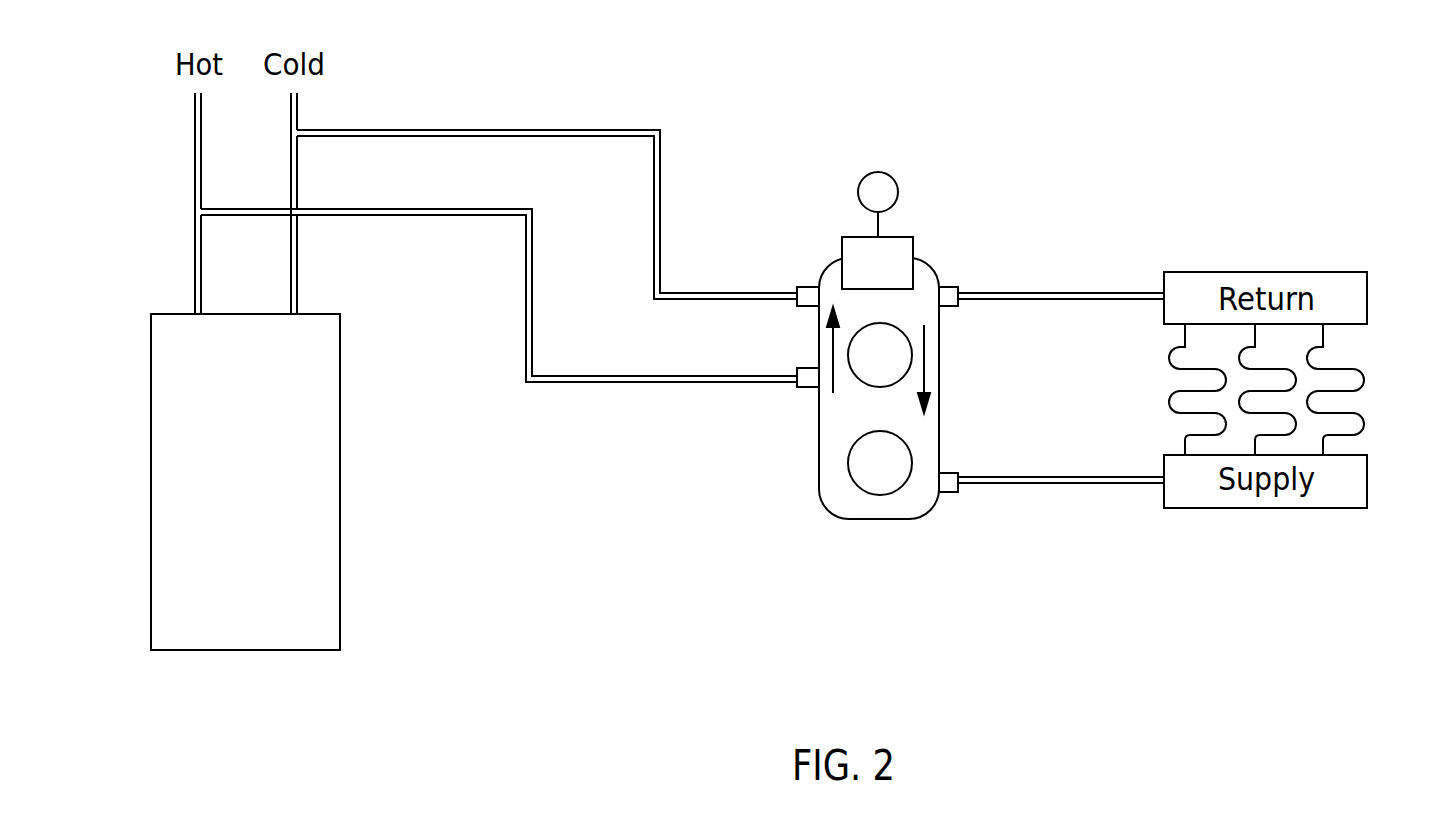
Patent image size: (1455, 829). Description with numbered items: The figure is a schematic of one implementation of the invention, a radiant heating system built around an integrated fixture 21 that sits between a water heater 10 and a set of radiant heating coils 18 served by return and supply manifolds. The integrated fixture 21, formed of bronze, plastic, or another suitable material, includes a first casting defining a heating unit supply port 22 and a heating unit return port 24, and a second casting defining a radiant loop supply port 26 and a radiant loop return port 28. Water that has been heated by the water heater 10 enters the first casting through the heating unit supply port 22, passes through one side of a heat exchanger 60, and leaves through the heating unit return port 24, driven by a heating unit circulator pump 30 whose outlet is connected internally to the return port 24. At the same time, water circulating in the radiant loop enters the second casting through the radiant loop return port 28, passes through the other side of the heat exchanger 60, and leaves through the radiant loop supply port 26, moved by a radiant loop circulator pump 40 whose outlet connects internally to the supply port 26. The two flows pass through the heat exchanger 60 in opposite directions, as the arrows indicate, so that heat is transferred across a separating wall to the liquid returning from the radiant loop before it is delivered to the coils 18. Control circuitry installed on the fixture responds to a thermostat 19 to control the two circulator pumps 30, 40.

The water heater 10 is at (207, 652).
The radiant heating loops 18 is at (1363, 378).
The thermostat 19 is at (878, 171).
The integrated fixture 21 is at (833, 425).
The heating unit supply port 22 is at (808, 368).
The heating unit return port 24 is at (808, 287).
The radiant loop supply port 26 is at (948, 287).
The radiant loop return port 28 is at (947, 493).
The heating unit circulator pump 30 is at (902, 358).
The radiant loop circulator pump 40 is at (902, 463).
The heat exchanger 60 is at (858, 243).